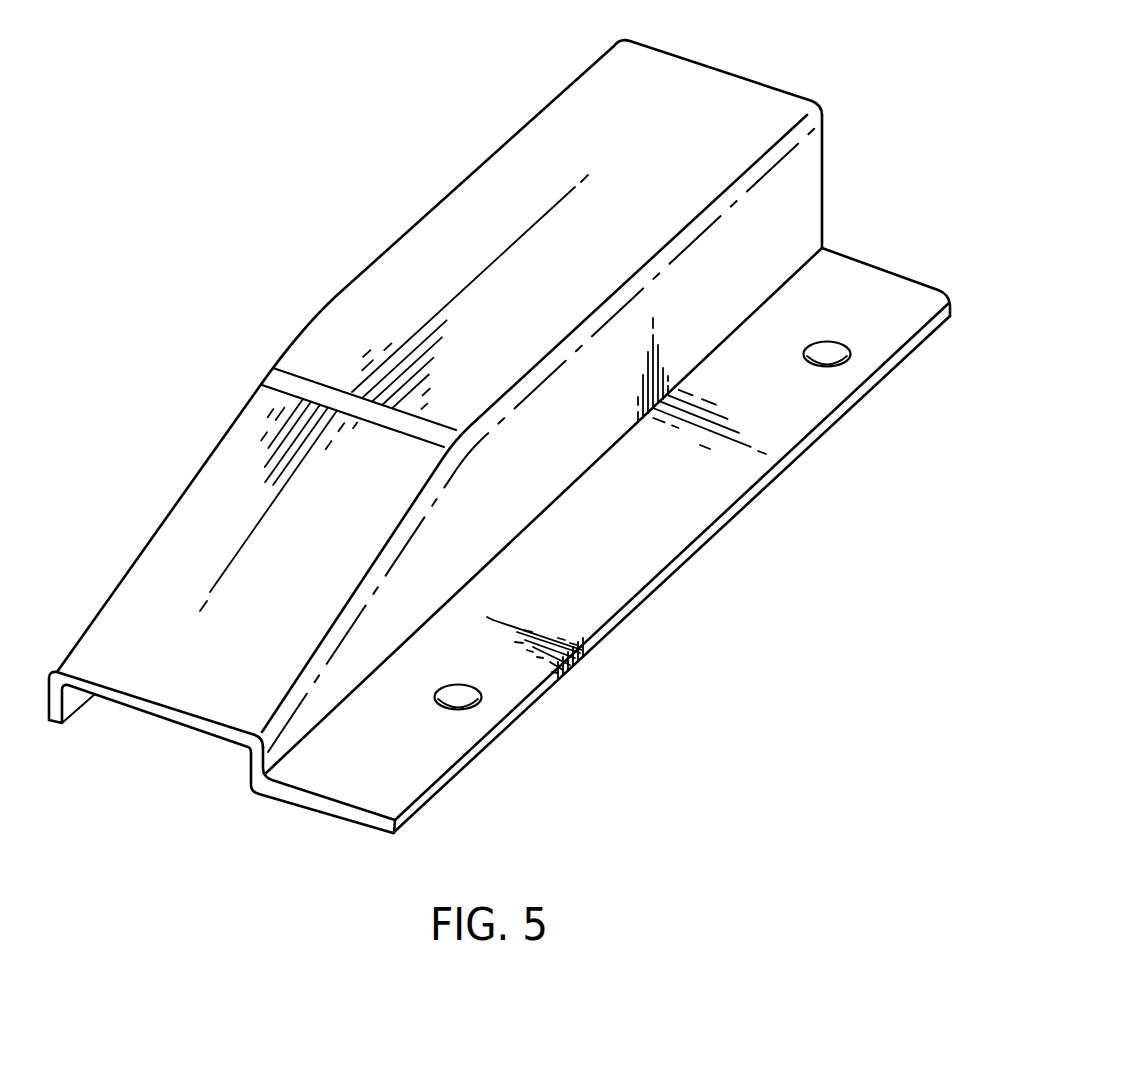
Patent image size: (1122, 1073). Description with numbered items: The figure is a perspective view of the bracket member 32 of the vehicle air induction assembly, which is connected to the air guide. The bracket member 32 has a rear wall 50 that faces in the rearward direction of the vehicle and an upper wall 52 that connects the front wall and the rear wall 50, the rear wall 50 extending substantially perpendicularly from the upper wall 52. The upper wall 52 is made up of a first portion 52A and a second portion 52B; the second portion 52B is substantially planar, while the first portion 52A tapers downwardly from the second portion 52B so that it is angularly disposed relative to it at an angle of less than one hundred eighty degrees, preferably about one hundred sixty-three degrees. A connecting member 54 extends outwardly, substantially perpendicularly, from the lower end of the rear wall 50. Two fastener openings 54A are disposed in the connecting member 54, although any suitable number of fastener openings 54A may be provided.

The bracket member 32 is at (499, 432).
The rear wall 50 is at (784, 220).
The upper wall 52 is at (435, 392).
The first portion 52A is at (163, 576).
The second portion 52B is at (445, 253).
The connecting member 54 is at (600, 540).
The fastener opening 54A is at (473, 708).